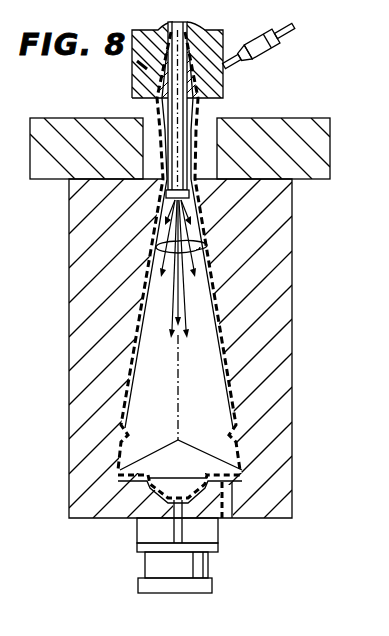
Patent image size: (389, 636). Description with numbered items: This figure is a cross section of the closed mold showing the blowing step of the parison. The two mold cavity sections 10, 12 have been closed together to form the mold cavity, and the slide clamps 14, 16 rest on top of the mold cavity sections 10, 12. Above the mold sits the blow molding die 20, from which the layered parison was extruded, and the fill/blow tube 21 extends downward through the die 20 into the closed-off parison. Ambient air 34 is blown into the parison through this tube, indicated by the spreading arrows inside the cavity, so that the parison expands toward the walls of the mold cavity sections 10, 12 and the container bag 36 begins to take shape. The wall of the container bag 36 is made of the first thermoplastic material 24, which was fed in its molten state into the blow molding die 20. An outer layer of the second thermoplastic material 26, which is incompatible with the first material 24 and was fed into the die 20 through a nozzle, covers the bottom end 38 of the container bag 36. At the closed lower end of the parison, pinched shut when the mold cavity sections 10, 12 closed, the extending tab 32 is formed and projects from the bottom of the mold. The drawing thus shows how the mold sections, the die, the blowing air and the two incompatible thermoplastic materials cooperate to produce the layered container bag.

The mold cavity section 10 is at (118, 306).
The mold cavity section 12 is at (261, 306).
The slide clamp 14 is at (108, 153).
The slide clamp 16 is at (286, 153).
The blow molding die 20 is at (110, 88).
The fill/blow tube 21 is at (180, 117).
The first thermoplastic material 24 is at (123, 399).
The second thermoplastic material 26 is at (140, 487).
The extending tab 32 is at (233, 522).
The ambient air 34 is at (196, 246).
The container bag 36 is at (110, 364).
The bottom end 38 is at (147, 512).